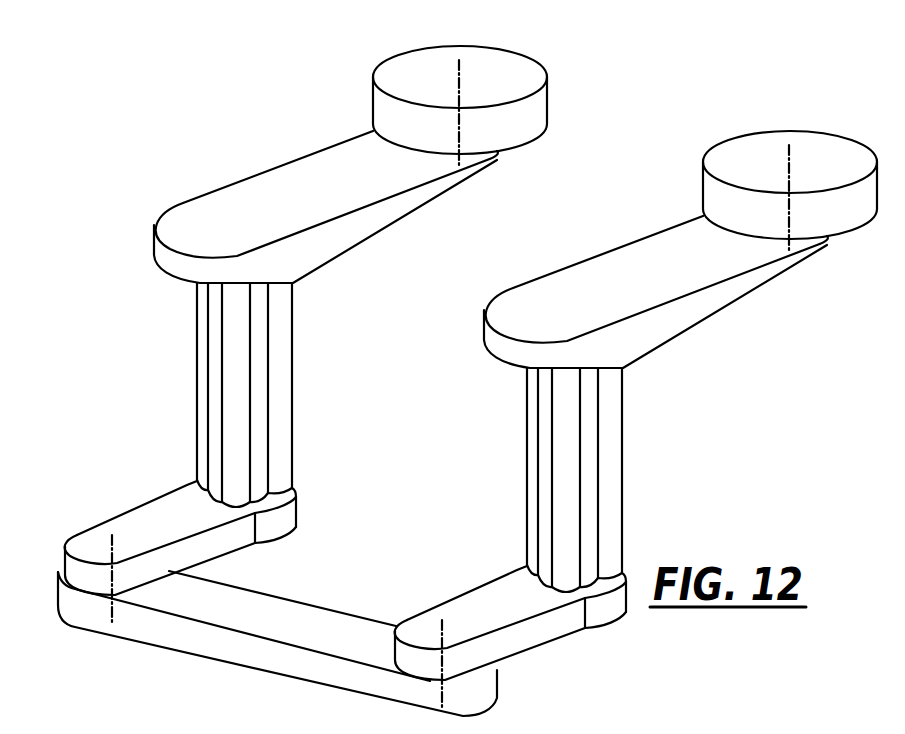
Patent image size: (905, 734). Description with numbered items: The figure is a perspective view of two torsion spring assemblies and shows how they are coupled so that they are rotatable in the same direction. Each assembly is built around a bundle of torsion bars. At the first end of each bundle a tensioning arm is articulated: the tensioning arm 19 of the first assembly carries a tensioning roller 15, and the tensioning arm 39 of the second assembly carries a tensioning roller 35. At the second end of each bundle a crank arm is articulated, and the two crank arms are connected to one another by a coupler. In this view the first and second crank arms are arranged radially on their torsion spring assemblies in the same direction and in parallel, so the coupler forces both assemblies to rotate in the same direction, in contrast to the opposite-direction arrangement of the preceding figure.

The tensioning roller 15 is at (293, 178).
The tensioning arm 19 is at (405, 72).
The tensioning roller 35 is at (660, 250).
The tensioning arm 39 is at (737, 153).